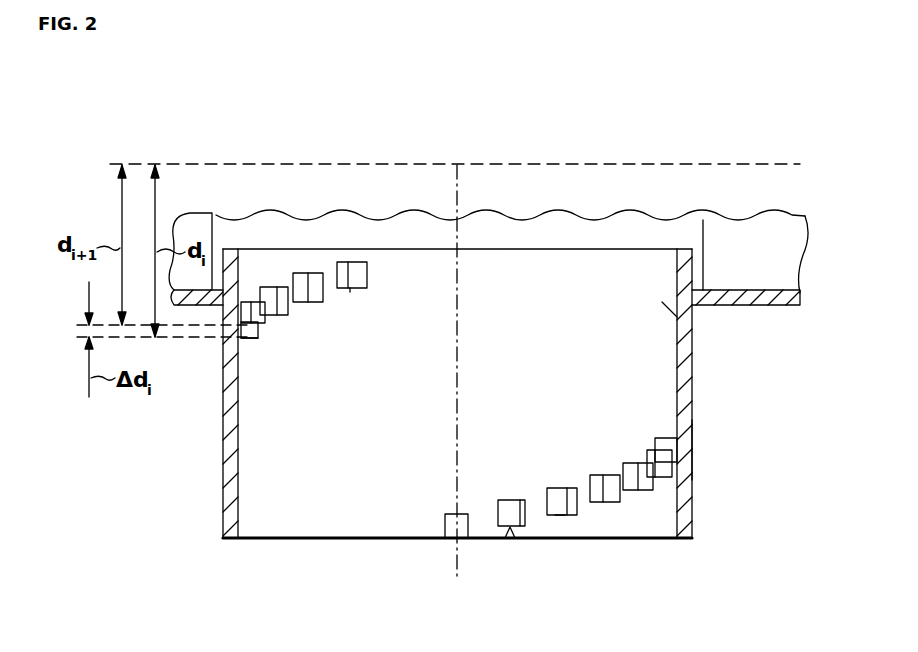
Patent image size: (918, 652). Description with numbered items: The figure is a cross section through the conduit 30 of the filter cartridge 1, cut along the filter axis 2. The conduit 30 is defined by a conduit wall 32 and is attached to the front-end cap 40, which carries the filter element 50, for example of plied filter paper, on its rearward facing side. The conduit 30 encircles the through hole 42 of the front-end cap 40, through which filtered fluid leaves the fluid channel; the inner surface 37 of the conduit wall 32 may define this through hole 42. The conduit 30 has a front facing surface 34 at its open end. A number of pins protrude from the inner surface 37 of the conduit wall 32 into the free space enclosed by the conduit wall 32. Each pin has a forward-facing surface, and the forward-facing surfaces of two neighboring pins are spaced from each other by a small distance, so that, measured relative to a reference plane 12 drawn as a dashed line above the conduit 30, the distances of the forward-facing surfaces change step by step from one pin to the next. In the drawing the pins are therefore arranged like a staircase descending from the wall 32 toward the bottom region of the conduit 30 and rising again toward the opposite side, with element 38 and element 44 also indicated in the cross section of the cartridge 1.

The filter cartridge 1 is at (683, 137).
The filter axis 2 is at (460, 187).
The reference plane 12 is at (186, 164).
The conduit 30 is at (498, 432).
The conduit wall 32 is at (693, 380).
The front facing surface 34 is at (413, 548).
The inner surface 37 is at (677, 317).
The outer wall surface 38 is at (703, 462).
The front-end cap 40 is at (795, 305).
The through hole 42 is at (366, 514).
The support ledge 44 is at (201, 315).
The filter element 50 is at (748, 230).